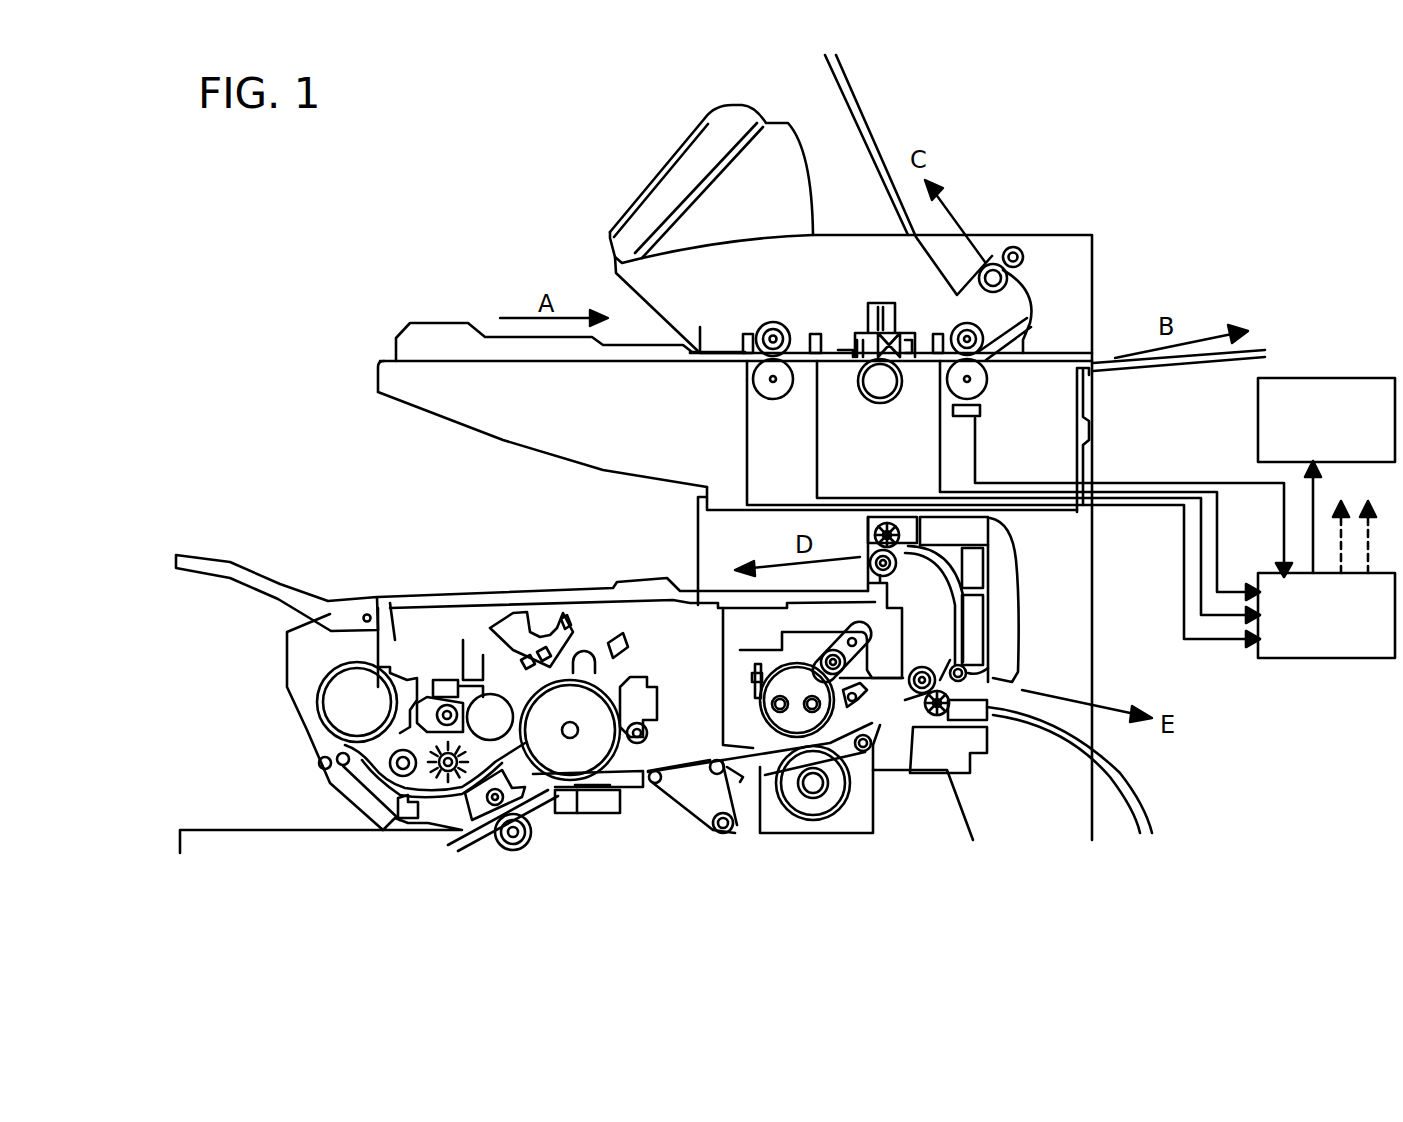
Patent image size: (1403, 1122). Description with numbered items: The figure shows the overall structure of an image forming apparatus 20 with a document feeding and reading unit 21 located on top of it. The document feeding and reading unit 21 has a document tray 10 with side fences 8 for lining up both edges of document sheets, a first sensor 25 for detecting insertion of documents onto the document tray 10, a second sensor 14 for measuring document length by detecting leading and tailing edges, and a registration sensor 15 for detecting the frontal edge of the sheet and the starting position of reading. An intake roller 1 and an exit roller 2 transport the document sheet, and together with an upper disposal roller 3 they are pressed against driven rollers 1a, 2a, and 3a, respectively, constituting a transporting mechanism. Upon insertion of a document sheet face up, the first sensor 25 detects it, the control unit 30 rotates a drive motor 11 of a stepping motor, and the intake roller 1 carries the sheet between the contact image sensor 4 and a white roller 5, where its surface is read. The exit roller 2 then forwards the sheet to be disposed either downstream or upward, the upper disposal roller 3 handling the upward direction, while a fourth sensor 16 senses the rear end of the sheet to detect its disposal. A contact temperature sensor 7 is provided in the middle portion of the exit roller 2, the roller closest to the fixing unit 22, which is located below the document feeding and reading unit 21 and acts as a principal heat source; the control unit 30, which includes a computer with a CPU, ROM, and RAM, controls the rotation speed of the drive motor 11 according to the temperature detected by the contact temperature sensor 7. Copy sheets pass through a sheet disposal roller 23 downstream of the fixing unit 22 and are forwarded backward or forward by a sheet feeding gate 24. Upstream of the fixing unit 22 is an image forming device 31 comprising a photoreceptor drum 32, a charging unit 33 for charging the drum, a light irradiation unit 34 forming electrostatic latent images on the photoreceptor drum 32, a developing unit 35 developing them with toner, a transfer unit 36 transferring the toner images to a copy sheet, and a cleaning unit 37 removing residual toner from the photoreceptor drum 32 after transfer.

The intake roller 1 is at (773, 402).
The driven roller 1a is at (772, 324).
The exit roller 2 is at (988, 381).
The driven roller 2a is at (968, 321).
The upper disposal roller 3 is at (1024, 259).
The driven roller 3a is at (1030, 291).
The contact image sensor 4 is at (873, 303).
The white roller 5 is at (882, 404).
The contact temperature sensor 7 is at (965, 420).
The side fences 8 is at (445, 323).
The document tray 10 is at (380, 357).
The drive motor 11 is at (1370, 378).
The second sensor 14 is at (743, 338).
The registration sensor 15 is at (815, 333).
The fourth sensor 16 is at (935, 332).
The image forming apparatus 20 is at (333, 452).
The document feeding and reading unit 21 is at (1062, 192).
The fixing unit 22 is at (780, 645).
The sheet disposal roller 23 is at (963, 708).
The sheet feeding gate 24 is at (993, 677).
The first sensor 25 is at (730, 374).
The control unit 30 is at (1290, 659).
The image forming device 31 is at (412, 840).
The photoreceptor drum 32 is at (598, 681).
The charging unit 33 is at (607, 637).
The light irradiation unit 34 is at (531, 640).
The developing unit 35 is at (472, 632).
The transfer unit 36 is at (568, 815).
The cleaning unit 37 is at (660, 697).